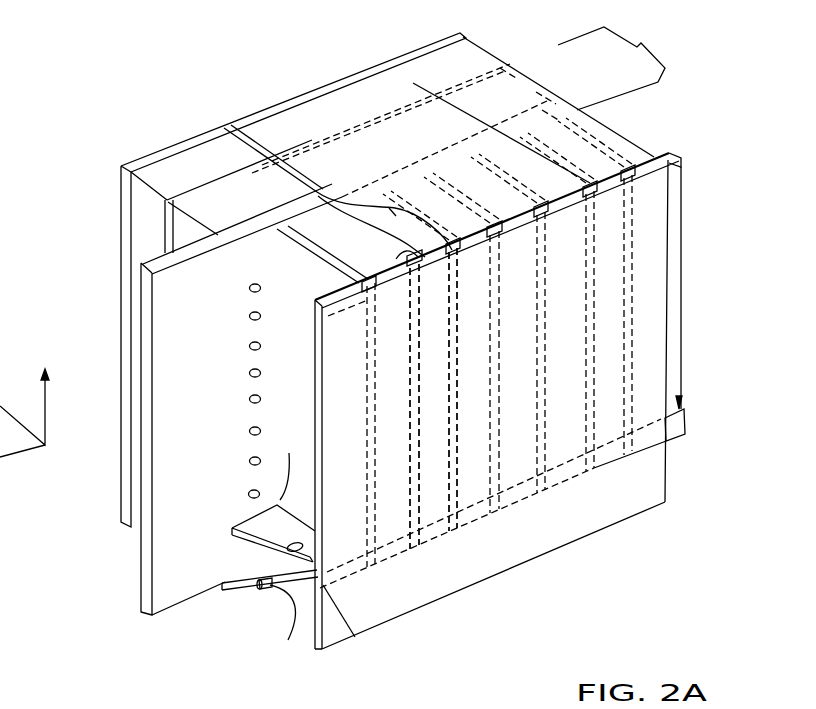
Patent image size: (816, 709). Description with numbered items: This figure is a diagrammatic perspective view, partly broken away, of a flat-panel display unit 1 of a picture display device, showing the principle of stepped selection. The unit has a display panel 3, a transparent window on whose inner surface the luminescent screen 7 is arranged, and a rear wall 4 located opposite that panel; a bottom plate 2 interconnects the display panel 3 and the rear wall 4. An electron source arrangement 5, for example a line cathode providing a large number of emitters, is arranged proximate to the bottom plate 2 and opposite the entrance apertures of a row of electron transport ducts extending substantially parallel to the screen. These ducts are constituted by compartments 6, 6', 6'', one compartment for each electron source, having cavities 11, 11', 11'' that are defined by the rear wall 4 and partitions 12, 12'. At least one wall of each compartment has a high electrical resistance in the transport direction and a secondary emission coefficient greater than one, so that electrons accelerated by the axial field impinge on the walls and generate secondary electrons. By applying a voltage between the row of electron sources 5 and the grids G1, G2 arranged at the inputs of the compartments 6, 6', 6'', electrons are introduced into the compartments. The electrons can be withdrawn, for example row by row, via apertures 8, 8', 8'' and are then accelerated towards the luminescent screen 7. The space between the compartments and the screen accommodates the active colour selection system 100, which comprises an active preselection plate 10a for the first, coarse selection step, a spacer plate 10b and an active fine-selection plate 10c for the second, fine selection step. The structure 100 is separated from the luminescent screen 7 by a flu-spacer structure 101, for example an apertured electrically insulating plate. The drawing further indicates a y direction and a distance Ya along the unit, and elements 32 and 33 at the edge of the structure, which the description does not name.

The flat-panel display unit 1 is at (684, 505).
The bottom plate 2 is at (133, 526).
The display panel 3 is at (152, 163).
The rear wall 4 is at (612, 416).
The electron source arrangement 5 is at (272, 610).
The compartment 6 is at (490, 391).
The compartment 6' is at (425, 459).
The compartment 6'' is at (475, 433).
The luminescent screen 7 is at (145, 227).
The aperture 8 is at (276, 390).
The aperture 8' is at (279, 327).
The aperture 8'' is at (280, 363).
The preselection plate 10a is at (543, 106).
The spacer plate 10b is at (545, 102).
The fine-selection plate 10c is at (535, 50).
The cavity 11 is at (249, 521).
The cavity 11' is at (338, 160).
The cavity 11'' is at (358, 123).
The partition 12 is at (326, 259).
The partition 12' is at (421, 283).
The upper clamp 32 is at (682, 166).
The lower clamp 33 is at (685, 425).
The active colour selection system 100 is at (623, 61).
The flu-spacer structure 101 is at (136, 231).
The grid G1 is at (283, 630).
The grid G2 is at (350, 630).
The distance Ya is at (680, 293).
The y axis y is at (27, 396).